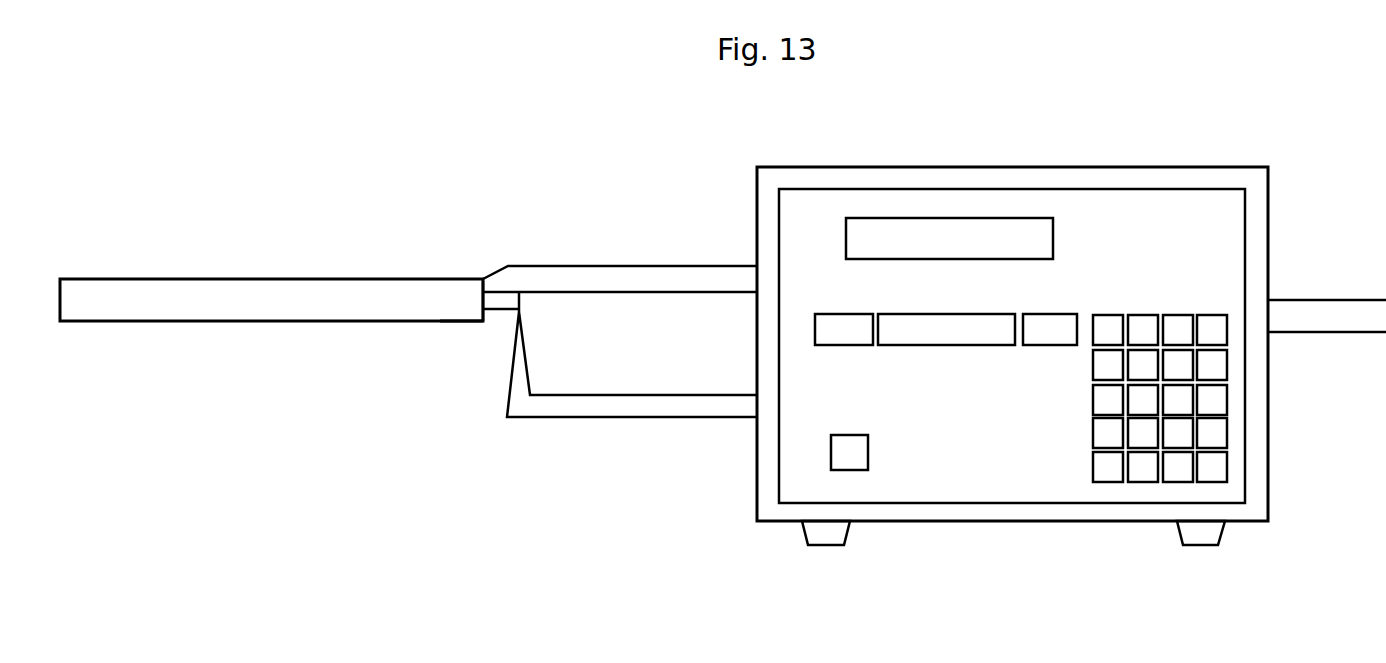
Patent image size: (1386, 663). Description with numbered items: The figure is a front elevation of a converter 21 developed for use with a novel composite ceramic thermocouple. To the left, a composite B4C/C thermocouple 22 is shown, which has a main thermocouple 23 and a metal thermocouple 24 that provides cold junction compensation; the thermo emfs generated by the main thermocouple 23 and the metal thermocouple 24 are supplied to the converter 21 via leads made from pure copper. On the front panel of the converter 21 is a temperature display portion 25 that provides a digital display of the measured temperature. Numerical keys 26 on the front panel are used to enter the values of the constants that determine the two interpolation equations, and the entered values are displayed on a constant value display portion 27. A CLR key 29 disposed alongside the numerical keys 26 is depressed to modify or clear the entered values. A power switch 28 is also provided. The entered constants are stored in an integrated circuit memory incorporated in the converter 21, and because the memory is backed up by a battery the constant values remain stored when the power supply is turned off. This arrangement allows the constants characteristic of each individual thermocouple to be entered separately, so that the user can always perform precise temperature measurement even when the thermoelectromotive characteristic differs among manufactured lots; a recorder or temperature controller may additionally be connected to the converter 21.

The converter 21 is at (1016, 356).
The composite B4C/C thermocouple 22 is at (271, 340).
The main thermocouple 23 is at (438, 310).
The metal thermocouple 24 is at (527, 347).
The temperature display portion 25 is at (846, 238).
The numerical keys 26 is at (1093, 397).
The constant value display portion 27 is at (929, 345).
The power switch 28 is at (868, 447).
The CLR key 29 is at (1228, 364).